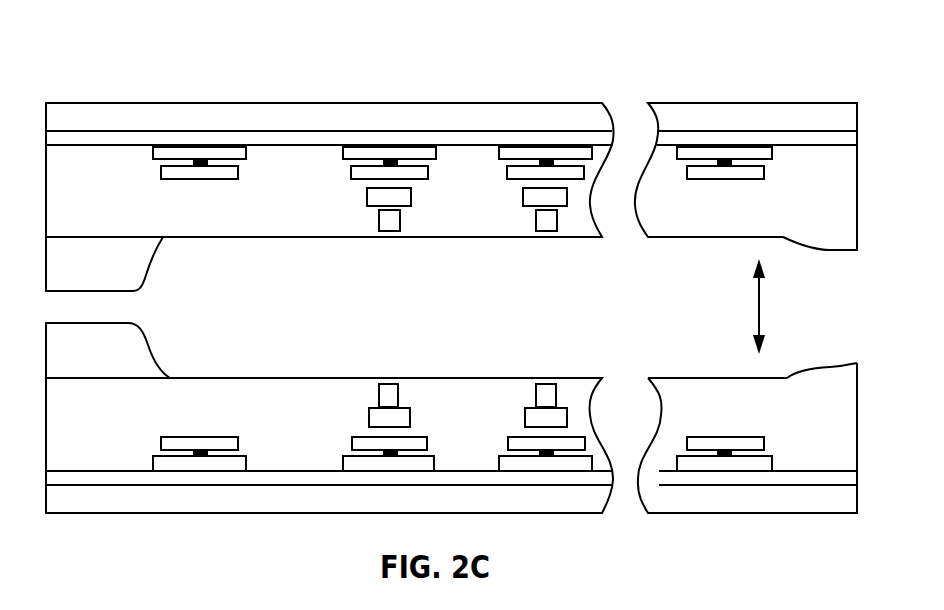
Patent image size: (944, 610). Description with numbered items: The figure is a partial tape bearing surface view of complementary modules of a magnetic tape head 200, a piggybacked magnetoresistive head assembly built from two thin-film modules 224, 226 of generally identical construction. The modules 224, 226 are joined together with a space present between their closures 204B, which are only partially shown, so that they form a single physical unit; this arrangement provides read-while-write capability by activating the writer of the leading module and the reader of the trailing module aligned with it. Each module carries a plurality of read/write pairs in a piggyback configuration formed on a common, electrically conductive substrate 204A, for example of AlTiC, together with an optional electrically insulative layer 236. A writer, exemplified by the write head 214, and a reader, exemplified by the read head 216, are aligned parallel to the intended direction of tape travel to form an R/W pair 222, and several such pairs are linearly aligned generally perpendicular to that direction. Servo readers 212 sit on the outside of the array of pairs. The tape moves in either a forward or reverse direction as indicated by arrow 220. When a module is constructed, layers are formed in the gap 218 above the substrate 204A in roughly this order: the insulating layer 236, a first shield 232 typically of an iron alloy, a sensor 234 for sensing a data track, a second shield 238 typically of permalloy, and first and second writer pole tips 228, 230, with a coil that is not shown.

The magnetic tape head 200 is at (381, 90).
The substrate 204A is at (180, 128).
The closure 204B is at (143, 273).
The gap 218 is at (247, 237).
The thin-film module 224 is at (779, 103).
The arrow 220 is at (759, 311).
The servo reader 212 is at (242, 430).
The R/W pair 222 is at (373, 389).
The second writer pole tip 230 is at (378, 390).
The first writer pole tip 228 is at (368, 418).
The second shield 238 is at (342, 447).
The sensor 234 is at (346, 451).
The first shield 232 is at (343, 463).
The write head 214 is at (383, 384).
The read head 216 is at (373, 436).
The electrically insulative layer 236 is at (847, 460).
The thin-film module 226 is at (767, 513).